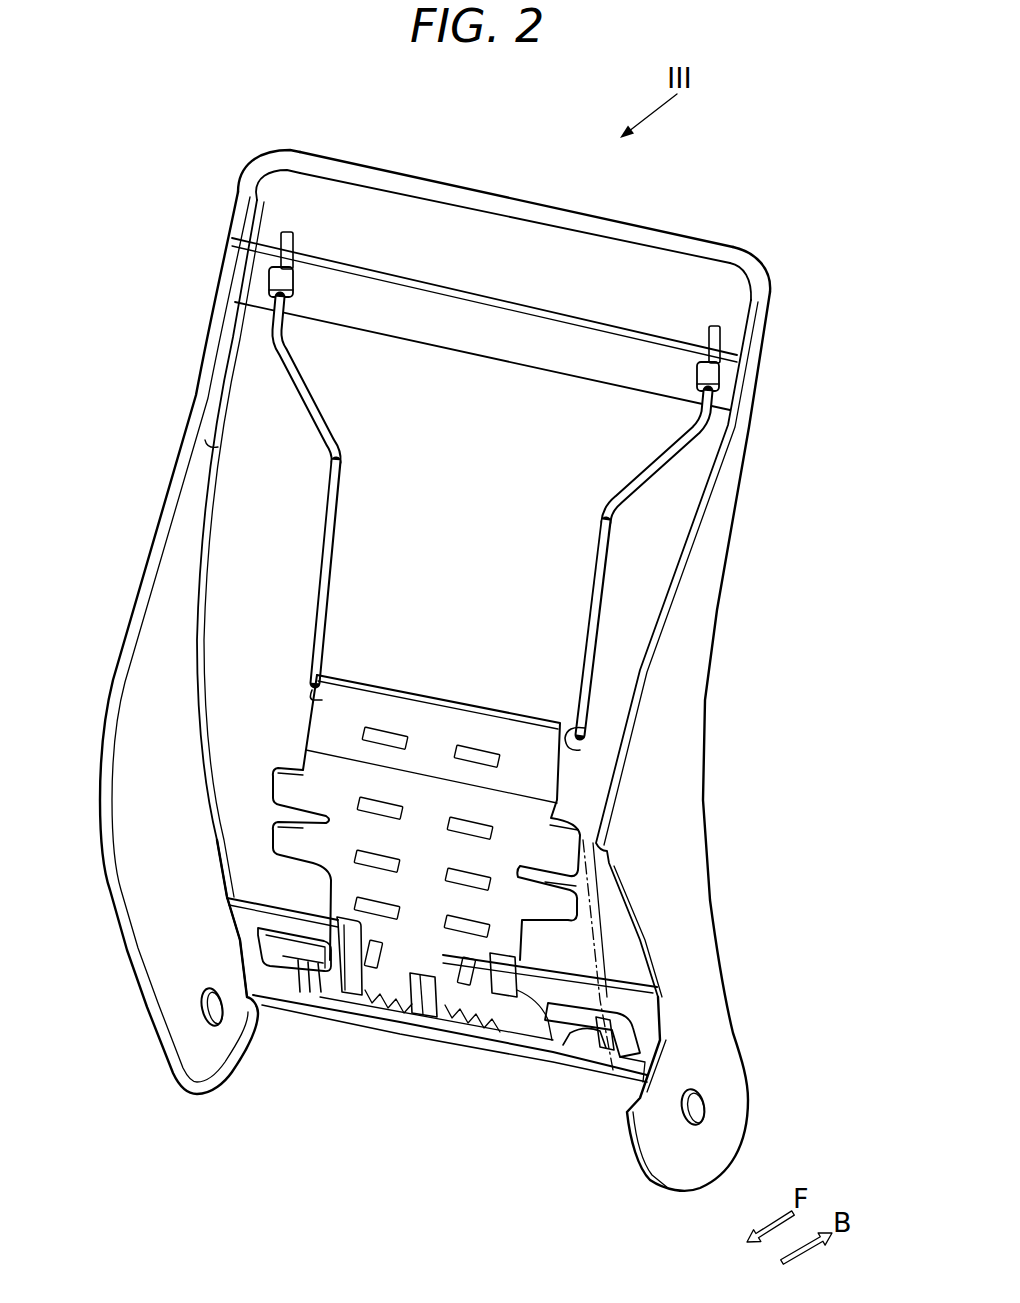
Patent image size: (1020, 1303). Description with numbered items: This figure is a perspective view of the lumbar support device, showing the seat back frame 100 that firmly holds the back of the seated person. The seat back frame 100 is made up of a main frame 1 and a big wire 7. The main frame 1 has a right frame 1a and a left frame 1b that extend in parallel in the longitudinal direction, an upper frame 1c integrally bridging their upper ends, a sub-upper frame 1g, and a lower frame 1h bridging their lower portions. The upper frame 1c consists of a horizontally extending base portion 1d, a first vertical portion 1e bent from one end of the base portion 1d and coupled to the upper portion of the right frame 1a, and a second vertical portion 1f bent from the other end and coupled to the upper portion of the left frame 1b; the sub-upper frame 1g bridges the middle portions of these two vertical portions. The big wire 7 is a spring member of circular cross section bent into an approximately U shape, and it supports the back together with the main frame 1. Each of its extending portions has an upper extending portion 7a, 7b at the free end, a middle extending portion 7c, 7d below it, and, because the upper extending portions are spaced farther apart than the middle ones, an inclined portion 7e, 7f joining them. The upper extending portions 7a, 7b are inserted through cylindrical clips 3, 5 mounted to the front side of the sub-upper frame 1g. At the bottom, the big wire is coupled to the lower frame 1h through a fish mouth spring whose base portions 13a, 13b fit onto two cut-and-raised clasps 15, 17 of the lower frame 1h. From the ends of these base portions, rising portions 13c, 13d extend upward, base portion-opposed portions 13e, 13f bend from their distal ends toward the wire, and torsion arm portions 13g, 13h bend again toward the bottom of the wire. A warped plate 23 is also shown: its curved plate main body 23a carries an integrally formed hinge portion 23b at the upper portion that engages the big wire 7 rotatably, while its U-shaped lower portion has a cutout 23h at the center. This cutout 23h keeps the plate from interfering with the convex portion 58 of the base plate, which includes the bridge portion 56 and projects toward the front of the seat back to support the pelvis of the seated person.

The seat back frame 100 is at (851, 382).
The main frame 1 is at (770, 228).
The right frame 1a is at (115, 683).
The left frame 1b is at (700, 610).
The upper frame 1c is at (337, 105).
The base portion 1d is at (517, 212).
The first vertical portion 1e is at (251, 212).
The second vertical portion 1f is at (753, 320).
The sub-upper frame 1g is at (370, 320).
The lower frame 1h is at (590, 1053).
The clip 3 is at (278, 282).
The clip 5 is at (715, 378).
The big wire 7 is at (647, 517).
The upper extending portion 7a is at (285, 245).
The upper extending portion 7b is at (721, 343).
The middle extending portion 7c is at (317, 617).
The middle extending portion 7d is at (603, 550).
The inclined portion 7e is at (303, 388).
The inclined portion 7f is at (667, 457).
The base portion 13a is at (283, 972).
The base portion 13b is at (643, 1047).
The rising portion 13c is at (262, 948).
The rising portion 13d is at (640, 1023).
The base portion-opposed portion 13e is at (262, 920).
The base portion-opposed portion 13f is at (620, 1000).
The torsion arm portion 13g is at (307, 975).
The torsion arm portion 13h is at (543, 1047).
The clasp 15 is at (291, 978).
The clasp 17 is at (603, 1017).
The warped plate 23 is at (580, 817).
The plate main body 23a is at (540, 790).
The hinge portion 23b is at (345, 673).
The cutout 23h is at (435, 1030).
The bridge portion 56 is at (407, 1020).
The convex portion 58 is at (423, 1008).